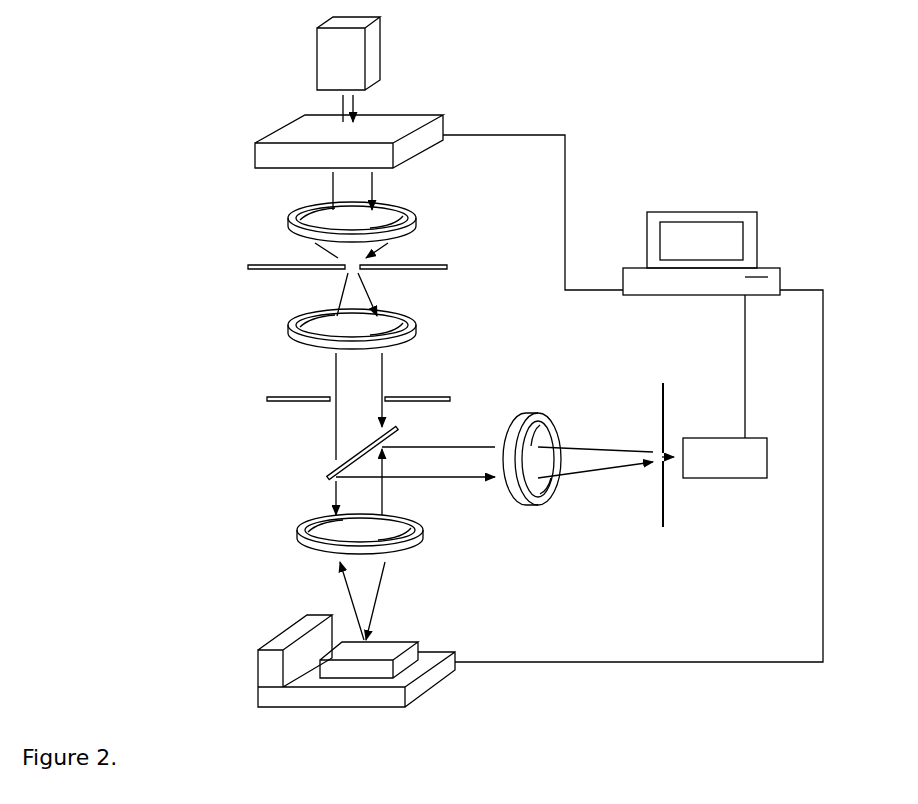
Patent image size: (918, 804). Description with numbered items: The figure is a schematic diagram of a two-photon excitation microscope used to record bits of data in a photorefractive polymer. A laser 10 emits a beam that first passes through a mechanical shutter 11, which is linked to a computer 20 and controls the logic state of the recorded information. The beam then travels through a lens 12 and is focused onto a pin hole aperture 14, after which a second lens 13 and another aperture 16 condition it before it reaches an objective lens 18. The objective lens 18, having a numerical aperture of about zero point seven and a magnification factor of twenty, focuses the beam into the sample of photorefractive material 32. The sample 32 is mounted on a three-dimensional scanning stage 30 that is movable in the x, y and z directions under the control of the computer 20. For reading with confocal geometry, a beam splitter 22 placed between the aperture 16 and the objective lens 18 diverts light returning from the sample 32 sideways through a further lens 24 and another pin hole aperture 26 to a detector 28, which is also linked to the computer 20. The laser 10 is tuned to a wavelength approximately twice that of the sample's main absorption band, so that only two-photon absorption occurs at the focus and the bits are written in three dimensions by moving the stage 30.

The laser 10 is at (318, 72).
The mechanical shutter 11 is at (413, 118).
The lens 12 is at (288, 225).
The lens 13 is at (288, 333).
The pin hole aperture 14 is at (425, 266).
The aperture 16 is at (422, 398).
The objective lens 18 is at (302, 543).
The computer 20 is at (702, 212).
The beam splitter 22 is at (328, 477).
The further lens 24 is at (557, 427).
The pin hole aperture 26 is at (663, 493).
The detector 28 is at (718, 478).
The three-dimensional scanning stage 30 is at (430, 652).
The sample of photorefractive material 32 is at (392, 640).